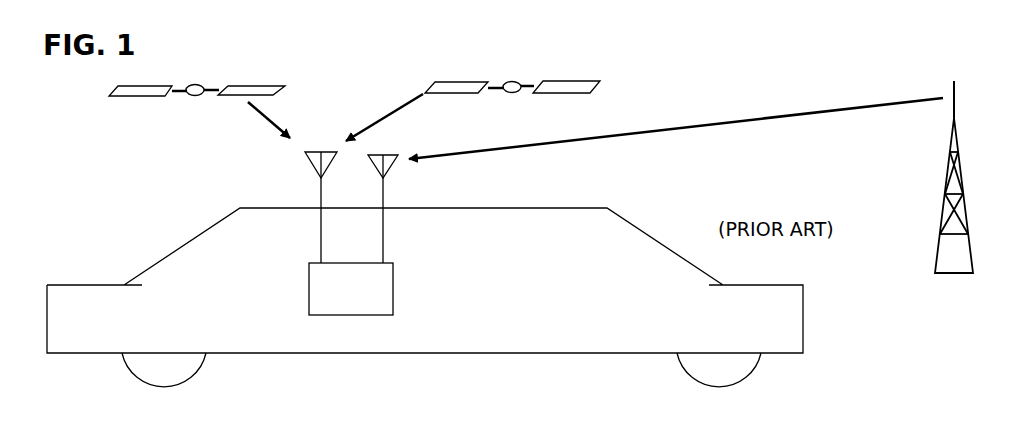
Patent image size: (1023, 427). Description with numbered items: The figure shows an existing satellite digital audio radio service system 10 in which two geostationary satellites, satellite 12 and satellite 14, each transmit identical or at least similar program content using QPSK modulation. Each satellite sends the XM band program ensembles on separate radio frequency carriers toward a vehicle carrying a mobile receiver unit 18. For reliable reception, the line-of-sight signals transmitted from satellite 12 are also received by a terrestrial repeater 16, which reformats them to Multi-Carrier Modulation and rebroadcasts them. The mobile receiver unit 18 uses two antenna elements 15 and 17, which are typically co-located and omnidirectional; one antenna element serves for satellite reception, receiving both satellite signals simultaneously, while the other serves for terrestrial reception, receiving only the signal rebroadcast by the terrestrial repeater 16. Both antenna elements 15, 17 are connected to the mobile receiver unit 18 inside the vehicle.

The SDARS system 10 is at (425, 267).
The satellite 12 is at (292, 92).
The satellite 14 is at (605, 92).
The antenna element 15 is at (308, 151).
The terrestrial repeater 16 is at (944, 161).
The antenna element 17 is at (393, 152).
The mobile receiver unit 18 is at (393, 303).